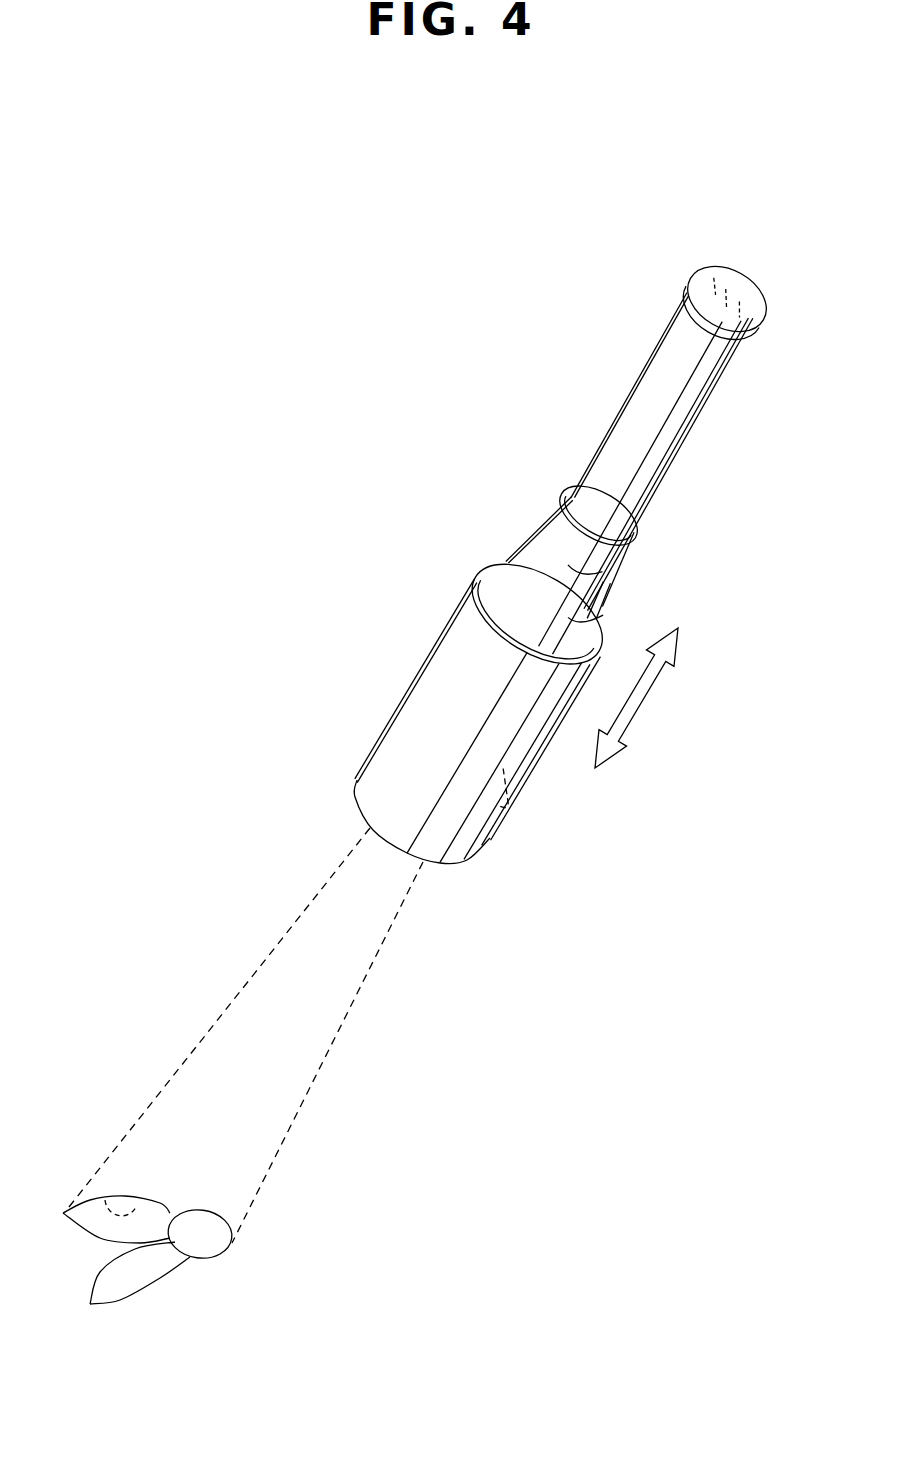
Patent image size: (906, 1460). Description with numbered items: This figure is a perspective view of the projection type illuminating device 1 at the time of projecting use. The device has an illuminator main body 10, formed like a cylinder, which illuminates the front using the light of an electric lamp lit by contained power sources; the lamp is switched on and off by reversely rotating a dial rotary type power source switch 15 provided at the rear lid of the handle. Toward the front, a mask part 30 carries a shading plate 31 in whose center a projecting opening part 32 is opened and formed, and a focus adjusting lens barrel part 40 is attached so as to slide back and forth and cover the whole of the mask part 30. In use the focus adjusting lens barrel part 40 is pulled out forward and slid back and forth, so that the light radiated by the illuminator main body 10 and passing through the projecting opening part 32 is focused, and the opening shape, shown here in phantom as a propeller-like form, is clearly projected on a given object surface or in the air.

The projection type illuminating device 1 is at (553, 472).
The illuminator main body 10 is at (652, 395).
The power source switch 15 is at (742, 305).
The mask part 30 is at (497, 627).
The shading plate 31 is at (512, 810).
The projecting opening part 32 is at (138, 1198).
The focus adjusting lens barrel part 40 is at (428, 697).